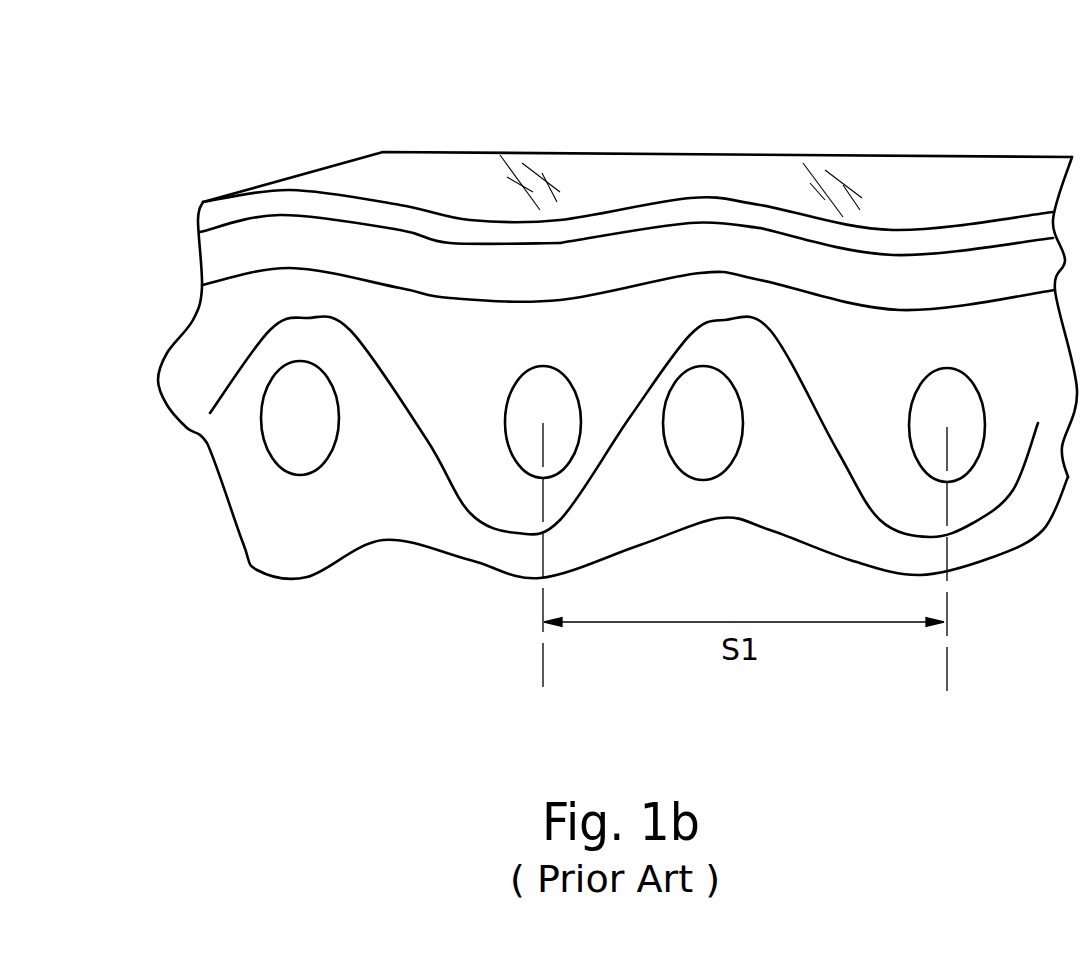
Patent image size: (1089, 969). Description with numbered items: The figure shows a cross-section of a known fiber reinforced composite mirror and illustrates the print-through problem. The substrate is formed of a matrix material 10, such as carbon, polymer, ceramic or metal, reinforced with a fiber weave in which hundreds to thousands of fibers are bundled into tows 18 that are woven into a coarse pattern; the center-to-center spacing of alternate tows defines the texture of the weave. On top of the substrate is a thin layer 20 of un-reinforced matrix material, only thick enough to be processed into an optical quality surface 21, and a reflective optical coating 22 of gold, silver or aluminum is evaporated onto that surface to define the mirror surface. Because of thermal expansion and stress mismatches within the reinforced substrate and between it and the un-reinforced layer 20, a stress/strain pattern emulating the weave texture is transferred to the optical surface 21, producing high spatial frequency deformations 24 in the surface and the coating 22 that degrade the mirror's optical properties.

The matrix material 10 is at (213, 320).
The tows 18 is at (218, 380).
The thin layer of un-reinforced matrix material 20 is at (208, 253).
The optical quality surface 21 is at (680, 230).
The reflective optical coating 22 is at (897, 206).
The high spatial frequency deformations 24 is at (350, 193).